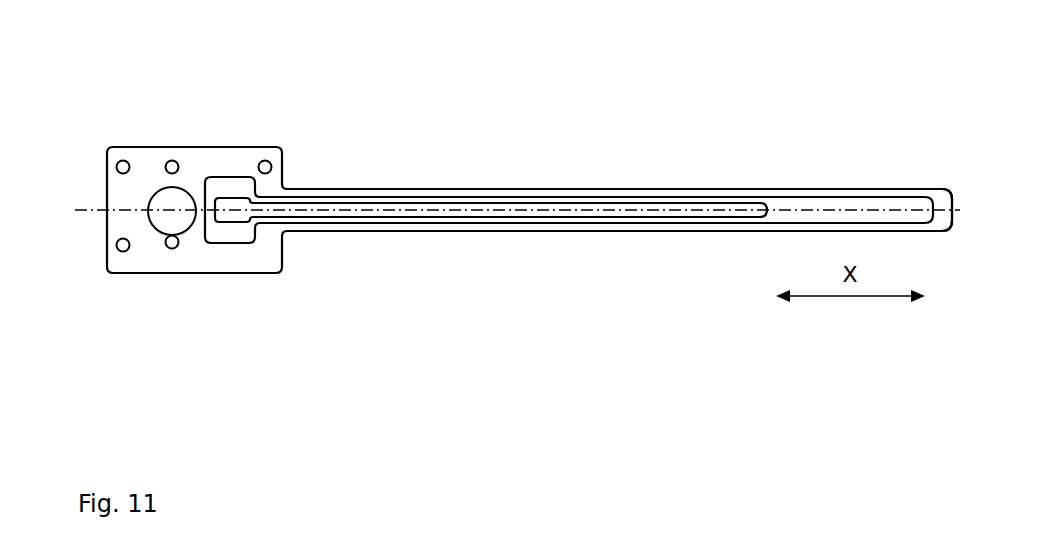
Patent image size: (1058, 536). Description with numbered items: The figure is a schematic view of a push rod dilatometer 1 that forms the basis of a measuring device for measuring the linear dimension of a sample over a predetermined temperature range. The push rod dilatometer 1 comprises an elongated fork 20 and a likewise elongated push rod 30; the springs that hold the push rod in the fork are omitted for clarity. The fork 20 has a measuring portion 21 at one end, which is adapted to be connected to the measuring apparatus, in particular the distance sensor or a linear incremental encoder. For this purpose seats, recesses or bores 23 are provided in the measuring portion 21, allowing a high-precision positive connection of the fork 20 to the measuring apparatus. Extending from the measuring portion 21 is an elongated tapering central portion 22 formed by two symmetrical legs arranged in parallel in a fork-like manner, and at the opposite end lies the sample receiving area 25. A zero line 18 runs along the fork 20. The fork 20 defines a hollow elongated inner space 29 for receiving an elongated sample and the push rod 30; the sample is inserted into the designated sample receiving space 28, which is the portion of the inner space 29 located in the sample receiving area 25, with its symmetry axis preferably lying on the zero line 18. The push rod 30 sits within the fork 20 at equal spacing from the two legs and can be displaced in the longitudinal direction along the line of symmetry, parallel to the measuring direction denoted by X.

The push rod dilatometer 1 is at (500, 198).
The zero line 18 is at (120, 212).
The fork 20 is at (204, 147).
The measuring portion 21 is at (217, 275).
The central portion 22 is at (393, 231).
The bores 23 is at (167, 163).
The sample receiving area 25 is at (948, 188).
The sample receiving space 28 is at (863, 203).
The inner space 29 is at (803, 203).
The push rod 30 is at (648, 203).